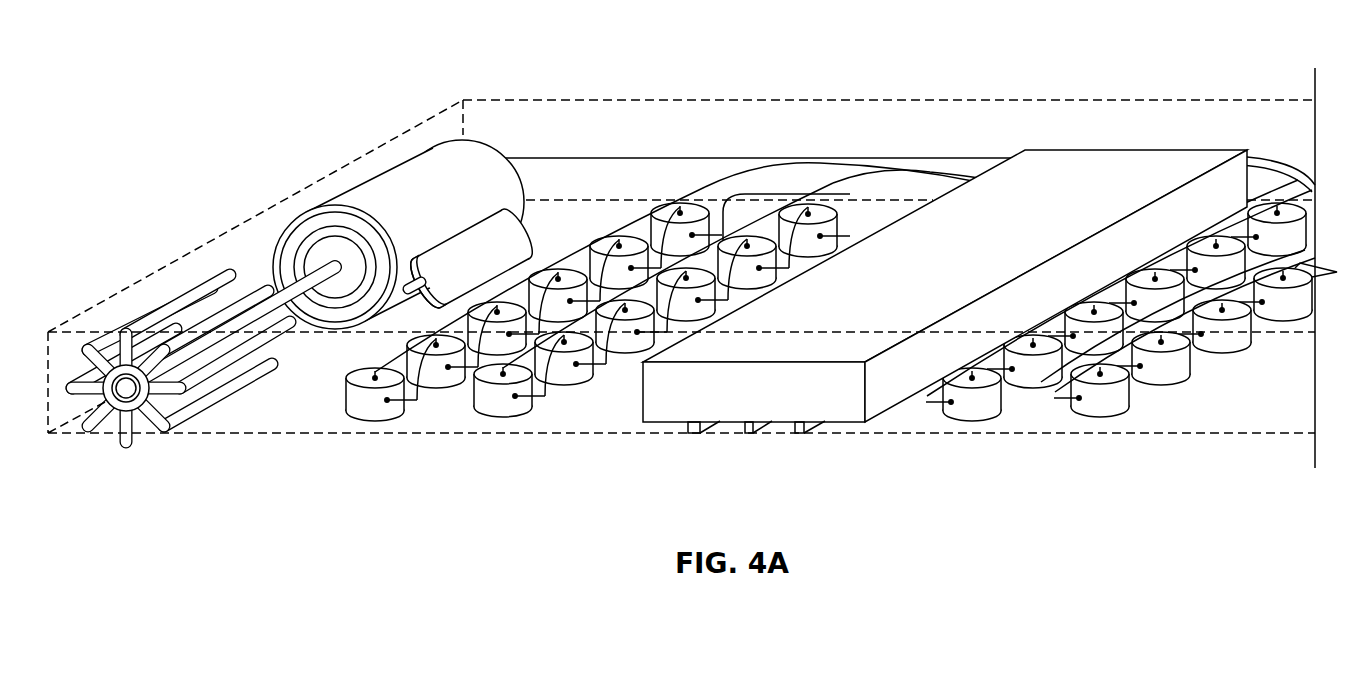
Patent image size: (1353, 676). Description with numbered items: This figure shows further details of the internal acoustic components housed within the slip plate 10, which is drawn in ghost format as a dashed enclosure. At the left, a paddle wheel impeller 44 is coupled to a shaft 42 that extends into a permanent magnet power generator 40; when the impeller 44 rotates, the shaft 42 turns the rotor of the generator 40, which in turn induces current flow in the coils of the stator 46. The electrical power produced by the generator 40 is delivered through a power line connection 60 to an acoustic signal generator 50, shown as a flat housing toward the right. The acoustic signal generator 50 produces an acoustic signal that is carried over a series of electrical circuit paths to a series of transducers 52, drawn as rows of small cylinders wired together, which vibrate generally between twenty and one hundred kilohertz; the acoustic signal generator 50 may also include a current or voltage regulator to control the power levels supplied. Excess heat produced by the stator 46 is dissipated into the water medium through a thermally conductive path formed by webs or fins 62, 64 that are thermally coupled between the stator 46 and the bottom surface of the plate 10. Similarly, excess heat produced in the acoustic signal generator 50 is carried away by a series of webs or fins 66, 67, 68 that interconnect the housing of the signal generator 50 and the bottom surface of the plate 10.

The slip plate 10 is at (628, 103).
The permanent magnet power generator 40 is at (331, 272).
The shaft 42 is at (272, 282).
The paddle wheel impeller 44 is at (125, 447).
The stator 46 is at (397, 163).
The acoustic signal generator 50 is at (1072, 150).
The transducers 52 is at (606, 240).
The power line connection 60 is at (598, 156).
The web or fin 62 is at (528, 233).
The web or fin 64 is at (375, 220).
The web or fin 66 is at (690, 436).
The web or fin 67 is at (746, 436).
The web or fin 68 is at (802, 436).